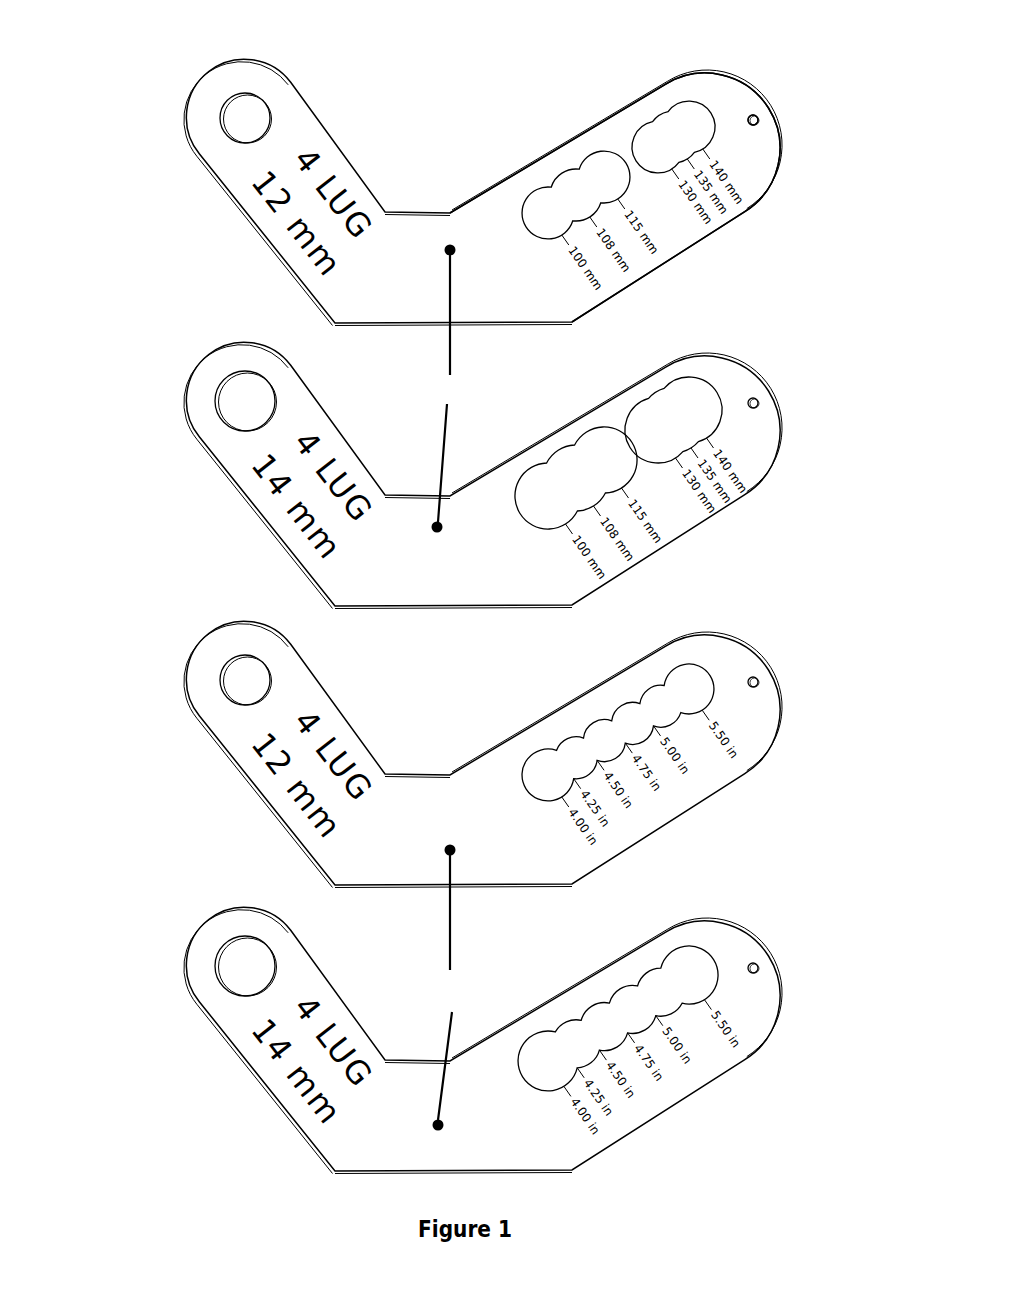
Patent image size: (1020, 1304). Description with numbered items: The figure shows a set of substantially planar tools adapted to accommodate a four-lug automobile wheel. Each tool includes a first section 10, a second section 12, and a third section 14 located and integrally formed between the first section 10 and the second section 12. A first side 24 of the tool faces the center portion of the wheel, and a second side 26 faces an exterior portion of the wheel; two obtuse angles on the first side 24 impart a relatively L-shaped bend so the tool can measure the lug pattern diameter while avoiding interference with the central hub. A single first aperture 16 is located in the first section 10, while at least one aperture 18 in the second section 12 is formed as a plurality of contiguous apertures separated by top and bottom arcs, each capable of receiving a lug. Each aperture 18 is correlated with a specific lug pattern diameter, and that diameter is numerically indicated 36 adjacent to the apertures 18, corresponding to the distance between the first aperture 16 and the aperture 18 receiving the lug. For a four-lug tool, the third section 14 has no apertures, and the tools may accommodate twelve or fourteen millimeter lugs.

The first section 10 is at (473, 589).
The second section 12 is at (540, 589).
The third section 14 is at (445, 688).
The first aperture 16 is at (237, 113).
The aperture 18 is at (663, 140).
The first side 24 is at (497, 174).
The second side 26 is at (640, 282).
The numerically indicated diameter 36 is at (740, 177).